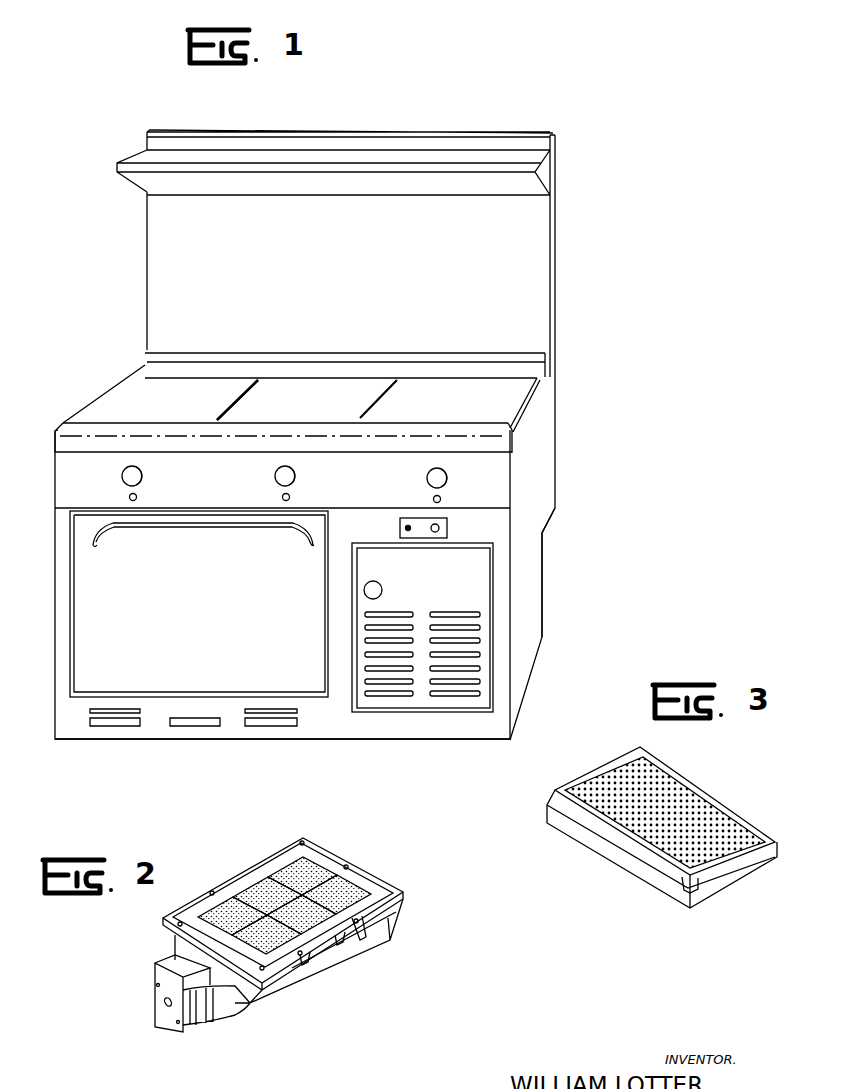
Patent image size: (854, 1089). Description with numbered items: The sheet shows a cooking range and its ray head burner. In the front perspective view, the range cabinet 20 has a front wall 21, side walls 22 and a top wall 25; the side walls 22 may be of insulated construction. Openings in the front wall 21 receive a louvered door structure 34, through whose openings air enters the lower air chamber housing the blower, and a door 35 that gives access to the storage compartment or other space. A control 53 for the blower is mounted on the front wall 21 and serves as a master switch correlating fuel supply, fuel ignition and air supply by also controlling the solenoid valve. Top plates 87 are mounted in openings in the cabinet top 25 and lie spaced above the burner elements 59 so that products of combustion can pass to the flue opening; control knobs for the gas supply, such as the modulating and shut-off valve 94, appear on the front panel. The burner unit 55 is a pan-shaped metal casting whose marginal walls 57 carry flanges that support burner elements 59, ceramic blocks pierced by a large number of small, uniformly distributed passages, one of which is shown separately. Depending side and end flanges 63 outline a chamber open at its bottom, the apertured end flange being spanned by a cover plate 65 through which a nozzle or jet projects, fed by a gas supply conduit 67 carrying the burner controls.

In FIG. 1, the range cabinet 20 is at (572, 451).
In FIG. 1, the front wall 21 is at (459, 729).
In FIG. 1, the side walls 22 is at (538, 554).
In FIG. 1, the top wall 25 is at (147, 364).
In FIG. 1, the louvered door structure 34 is at (410, 700).
In FIG. 1, the door 35 is at (87, 635).
In FIG. 1, the control 53 is at (439, 528).
In FIG. 2, the burner unit 55 is at (268, 948).
In FIG. 2, the marginal walls 57 is at (318, 968).
In FIG. 2, the burner elements 59 is at (357, 888).
In FIG. 3, the burner elements 59 is at (628, 858).
In FIG. 2, the depending side and end flanges 63 is at (230, 1008).
In FIG. 2, the cover plate 65 is at (165, 1006).
In FIG. 2, the gas supply conduit 67 is at (177, 958).
In FIG. 1, the top plates 87 is at (277, 387).
In FIG. 1, the modulating and shut-off valve 94 is at (137, 476).